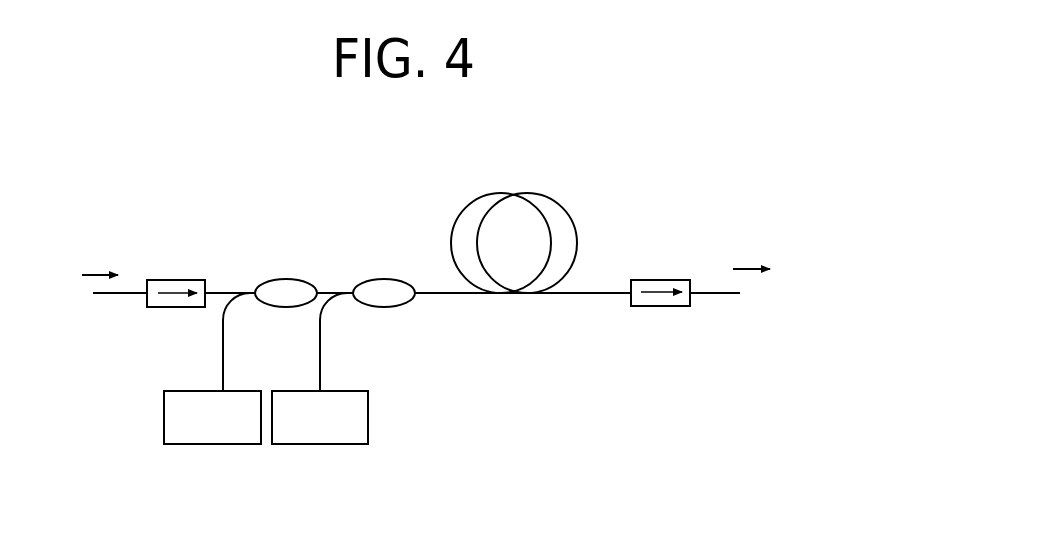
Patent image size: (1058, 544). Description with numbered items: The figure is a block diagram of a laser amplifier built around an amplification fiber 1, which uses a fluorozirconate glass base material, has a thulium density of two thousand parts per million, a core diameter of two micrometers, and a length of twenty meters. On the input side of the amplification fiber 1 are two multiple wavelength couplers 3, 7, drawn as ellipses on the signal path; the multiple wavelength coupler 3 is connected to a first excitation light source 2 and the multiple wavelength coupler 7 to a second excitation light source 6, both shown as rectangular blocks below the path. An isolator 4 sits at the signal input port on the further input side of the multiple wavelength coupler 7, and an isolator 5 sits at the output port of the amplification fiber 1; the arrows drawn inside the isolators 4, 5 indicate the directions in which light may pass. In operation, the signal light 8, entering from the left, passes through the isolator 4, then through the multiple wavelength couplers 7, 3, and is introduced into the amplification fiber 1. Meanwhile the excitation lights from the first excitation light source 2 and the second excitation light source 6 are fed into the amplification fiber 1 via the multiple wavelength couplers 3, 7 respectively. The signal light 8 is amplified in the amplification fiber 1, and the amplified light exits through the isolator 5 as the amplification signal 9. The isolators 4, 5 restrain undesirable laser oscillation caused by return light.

The amplification fiber 1 is at (490, 192).
The first excitation light source 2 is at (312, 445).
The multiple wavelength coupler 3 is at (387, 279).
The isolator 4 is at (173, 280).
The isolator 5 is at (660, 280).
The second excitation light source 6 is at (202, 445).
The multiple wavelength coupler 7 is at (284, 279).
The signal light 8 is at (93, 272).
The amplification signal 9 is at (748, 268).